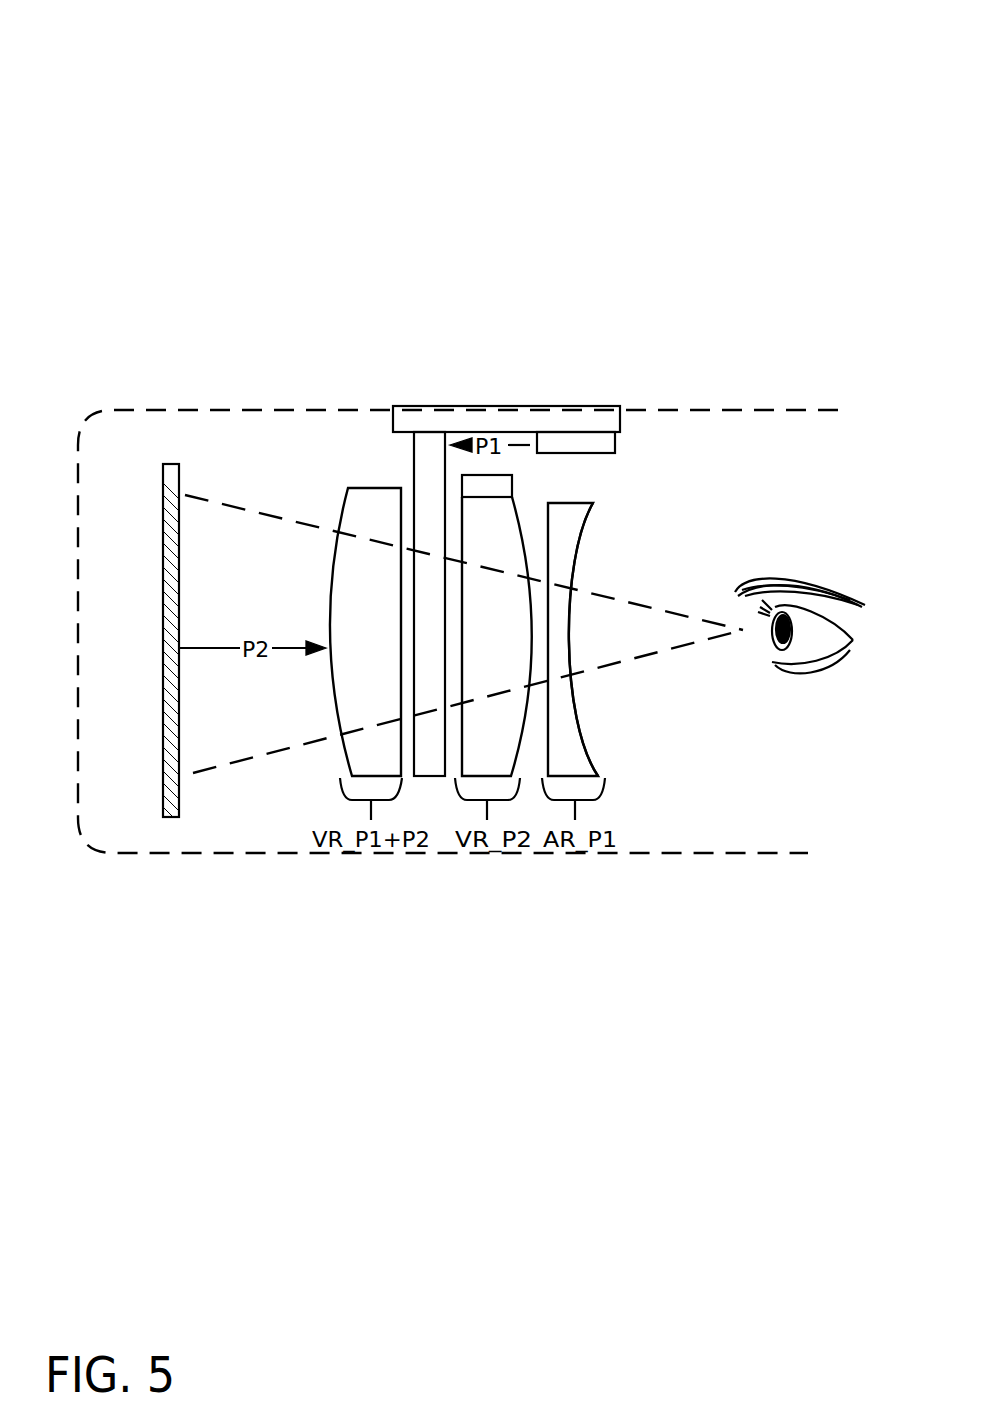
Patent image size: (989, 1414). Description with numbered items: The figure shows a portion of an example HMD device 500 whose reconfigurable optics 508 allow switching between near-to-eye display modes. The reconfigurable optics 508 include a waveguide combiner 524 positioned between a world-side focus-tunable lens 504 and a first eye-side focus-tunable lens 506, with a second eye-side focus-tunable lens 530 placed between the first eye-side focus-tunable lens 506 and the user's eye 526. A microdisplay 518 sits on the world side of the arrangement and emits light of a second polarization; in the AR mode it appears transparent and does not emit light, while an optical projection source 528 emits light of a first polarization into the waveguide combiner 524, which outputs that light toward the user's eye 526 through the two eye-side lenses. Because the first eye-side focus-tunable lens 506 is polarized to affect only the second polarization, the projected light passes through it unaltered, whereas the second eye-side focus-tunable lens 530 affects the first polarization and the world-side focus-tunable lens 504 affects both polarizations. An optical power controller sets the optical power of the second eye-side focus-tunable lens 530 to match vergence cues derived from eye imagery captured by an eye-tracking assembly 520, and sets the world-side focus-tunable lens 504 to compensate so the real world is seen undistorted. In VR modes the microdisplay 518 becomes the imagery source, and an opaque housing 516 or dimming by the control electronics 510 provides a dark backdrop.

The HMD device 500 is at (117, 80).
The world-side focus-tunable lens 504 is at (388, 644).
The first eye-side focus-tunable lens 506 is at (516, 644).
The reconfigurable optics 508 is at (645, 762).
The control electronics 510 is at (506, 419).
The housing 516 is at (665, 853).
The microdisplay 518 is at (179, 537).
The eye-tracking assembly 520 is at (512, 475).
The waveguide combiner 524 is at (414, 453).
The user's eye 526 is at (742, 648).
The optical projection source 528 is at (618, 440).
The second eye-side focus-tunable lens 530 is at (558, 563).